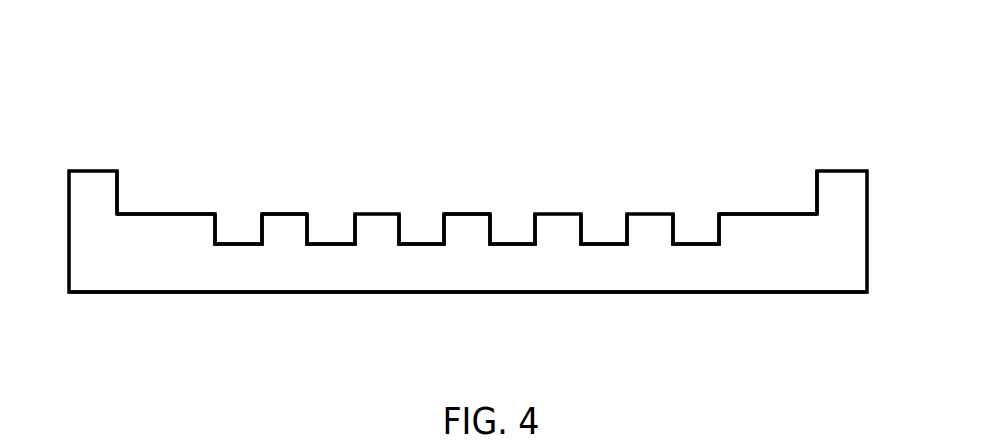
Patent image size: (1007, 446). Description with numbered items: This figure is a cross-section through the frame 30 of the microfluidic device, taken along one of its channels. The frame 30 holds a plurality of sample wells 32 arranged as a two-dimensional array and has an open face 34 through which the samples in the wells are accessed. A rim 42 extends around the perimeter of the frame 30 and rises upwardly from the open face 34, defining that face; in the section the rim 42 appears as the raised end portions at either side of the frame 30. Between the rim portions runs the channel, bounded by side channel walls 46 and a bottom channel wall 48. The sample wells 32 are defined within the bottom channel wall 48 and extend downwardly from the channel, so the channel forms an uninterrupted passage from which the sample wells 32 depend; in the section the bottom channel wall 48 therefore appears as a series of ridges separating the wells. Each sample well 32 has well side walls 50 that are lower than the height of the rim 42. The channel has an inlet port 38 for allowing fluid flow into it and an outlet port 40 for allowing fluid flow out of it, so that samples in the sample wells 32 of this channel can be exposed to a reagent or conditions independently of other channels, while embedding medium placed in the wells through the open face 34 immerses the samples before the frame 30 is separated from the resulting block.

The frame 30 is at (893, 120).
The sample wells 32 is at (239, 202).
The open face 34 is at (157, 106).
The inlet port 38 is at (172, 194).
The outlet port 40 is at (778, 150).
The rim 42 is at (854, 195).
The side channel walls 46 is at (119, 188).
The bottom channel wall 48 is at (207, 212).
The well side walls 50 is at (444, 229).